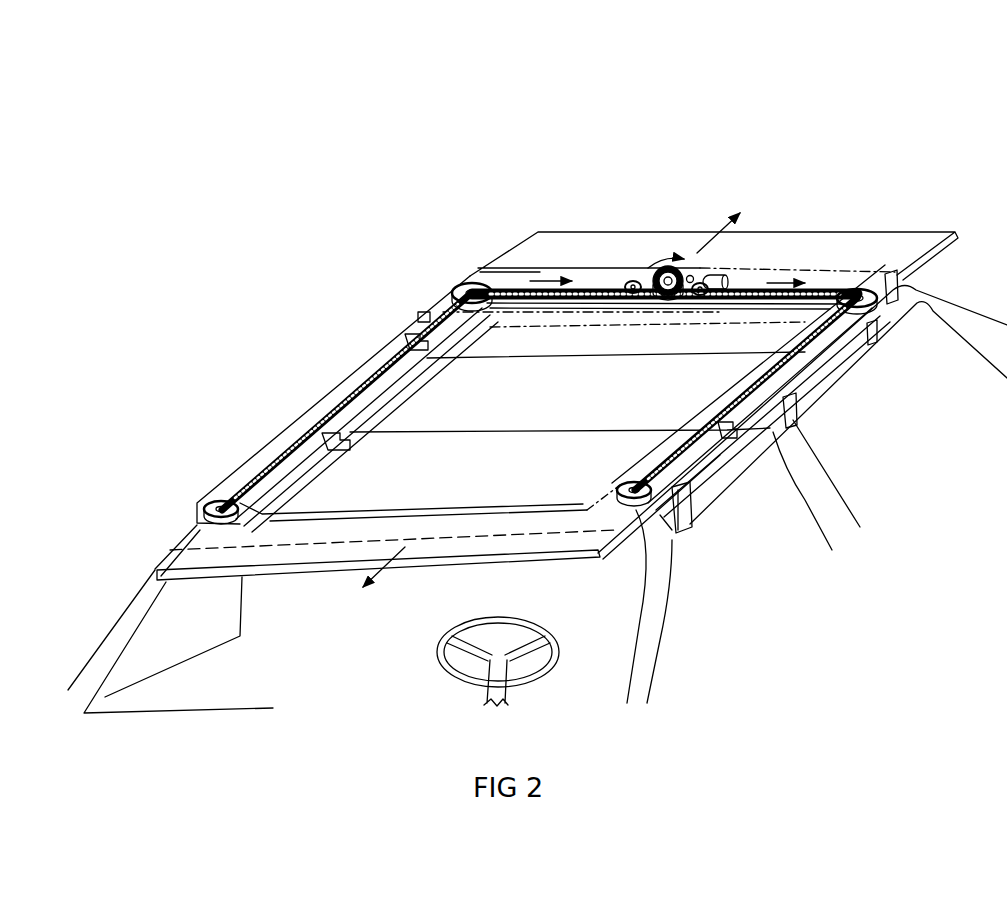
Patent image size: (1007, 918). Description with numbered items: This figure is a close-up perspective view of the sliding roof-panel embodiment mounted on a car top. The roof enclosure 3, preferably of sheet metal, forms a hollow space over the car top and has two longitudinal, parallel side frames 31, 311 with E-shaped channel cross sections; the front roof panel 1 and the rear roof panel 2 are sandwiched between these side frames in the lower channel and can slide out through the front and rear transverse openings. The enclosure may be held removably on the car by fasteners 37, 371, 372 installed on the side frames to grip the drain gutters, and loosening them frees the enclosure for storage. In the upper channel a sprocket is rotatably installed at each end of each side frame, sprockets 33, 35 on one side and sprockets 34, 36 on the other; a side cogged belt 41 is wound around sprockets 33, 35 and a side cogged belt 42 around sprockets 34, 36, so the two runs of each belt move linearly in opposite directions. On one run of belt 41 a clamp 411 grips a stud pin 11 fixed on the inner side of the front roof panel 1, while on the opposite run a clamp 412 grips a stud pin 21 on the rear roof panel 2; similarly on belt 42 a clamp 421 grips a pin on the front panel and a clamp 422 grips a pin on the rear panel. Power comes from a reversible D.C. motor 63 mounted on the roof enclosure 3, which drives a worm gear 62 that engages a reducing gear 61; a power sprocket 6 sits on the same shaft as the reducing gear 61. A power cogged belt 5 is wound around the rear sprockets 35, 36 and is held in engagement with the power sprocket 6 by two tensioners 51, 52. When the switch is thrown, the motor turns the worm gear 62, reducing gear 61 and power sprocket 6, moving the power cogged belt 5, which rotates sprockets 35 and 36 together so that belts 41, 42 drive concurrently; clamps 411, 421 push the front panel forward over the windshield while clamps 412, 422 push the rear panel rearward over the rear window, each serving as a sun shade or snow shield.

The front roof panel 1 is at (303, 557).
The rear roof panel 2 is at (541, 248).
The roof enclosure 3 is at (507, 397).
The power cogged belt 5 is at (600, 289).
The power sprocket 6 is at (672, 268).
The stud pin 11 is at (340, 432).
The stud pin 21 is at (423, 317).
The side frame 31 is at (197, 523).
The side sprocket 33 is at (200, 508).
The side sprocket 34 is at (640, 503).
The side sprocket 35 is at (463, 287).
The side sprocket 36 is at (847, 290).
The fastener 37 is at (692, 515).
The side cogged belt 41 is at (378, 360).
The side cogged belt 42 is at (800, 377).
The tensioner 51 is at (632, 281).
The tensioner 52 is at (701, 283).
The reducing gear 61 is at (663, 300).
The worm gear 62 is at (690, 275).
The reversible D.C. motor 63 is at (720, 275).
The side frame 311 is at (667, 523).
The fastener 371 is at (798, 411).
The fastener 372 is at (895, 300).
The clamp 411 is at (337, 433).
The clamp 412 is at (407, 333).
The clamp 421 is at (737, 432).
The clamp 422 is at (878, 342).